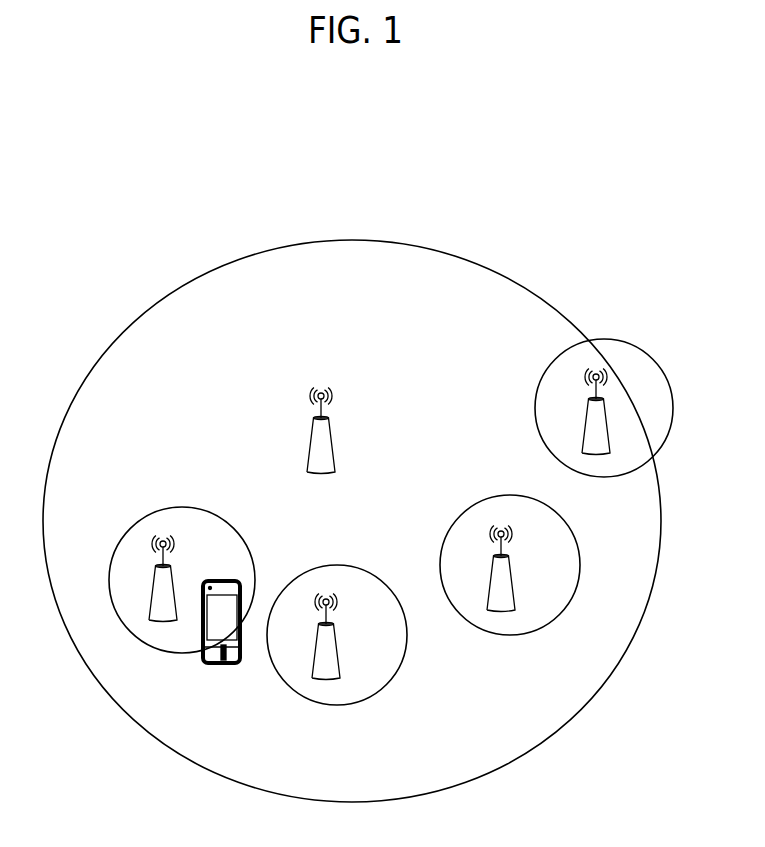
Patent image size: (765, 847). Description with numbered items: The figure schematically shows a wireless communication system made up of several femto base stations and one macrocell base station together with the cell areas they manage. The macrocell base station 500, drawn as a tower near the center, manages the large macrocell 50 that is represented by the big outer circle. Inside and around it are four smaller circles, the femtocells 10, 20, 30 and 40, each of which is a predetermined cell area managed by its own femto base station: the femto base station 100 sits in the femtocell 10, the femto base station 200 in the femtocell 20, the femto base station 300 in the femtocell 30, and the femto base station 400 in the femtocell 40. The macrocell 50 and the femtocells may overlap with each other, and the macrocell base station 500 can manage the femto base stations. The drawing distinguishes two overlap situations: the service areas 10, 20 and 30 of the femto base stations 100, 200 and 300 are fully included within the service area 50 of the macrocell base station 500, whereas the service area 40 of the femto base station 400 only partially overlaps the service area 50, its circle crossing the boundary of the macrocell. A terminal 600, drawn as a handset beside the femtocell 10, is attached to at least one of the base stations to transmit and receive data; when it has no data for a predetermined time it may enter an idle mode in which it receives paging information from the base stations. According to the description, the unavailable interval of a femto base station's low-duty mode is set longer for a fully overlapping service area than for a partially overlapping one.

The femtocell 10 is at (178, 507).
The femtocell 20 is at (337, 565).
The femtocell 30 is at (580, 560).
The femtocell 40 is at (608, 338).
The macrocell 50 is at (484, 265).
The femto base station 100 is at (147, 592).
The femto base station 200 is at (338, 660).
The femto base station 300 is at (512, 593).
The femto base station 400 is at (584, 427).
The macrocell base station 500 is at (331, 440).
The terminal 600 is at (223, 667).